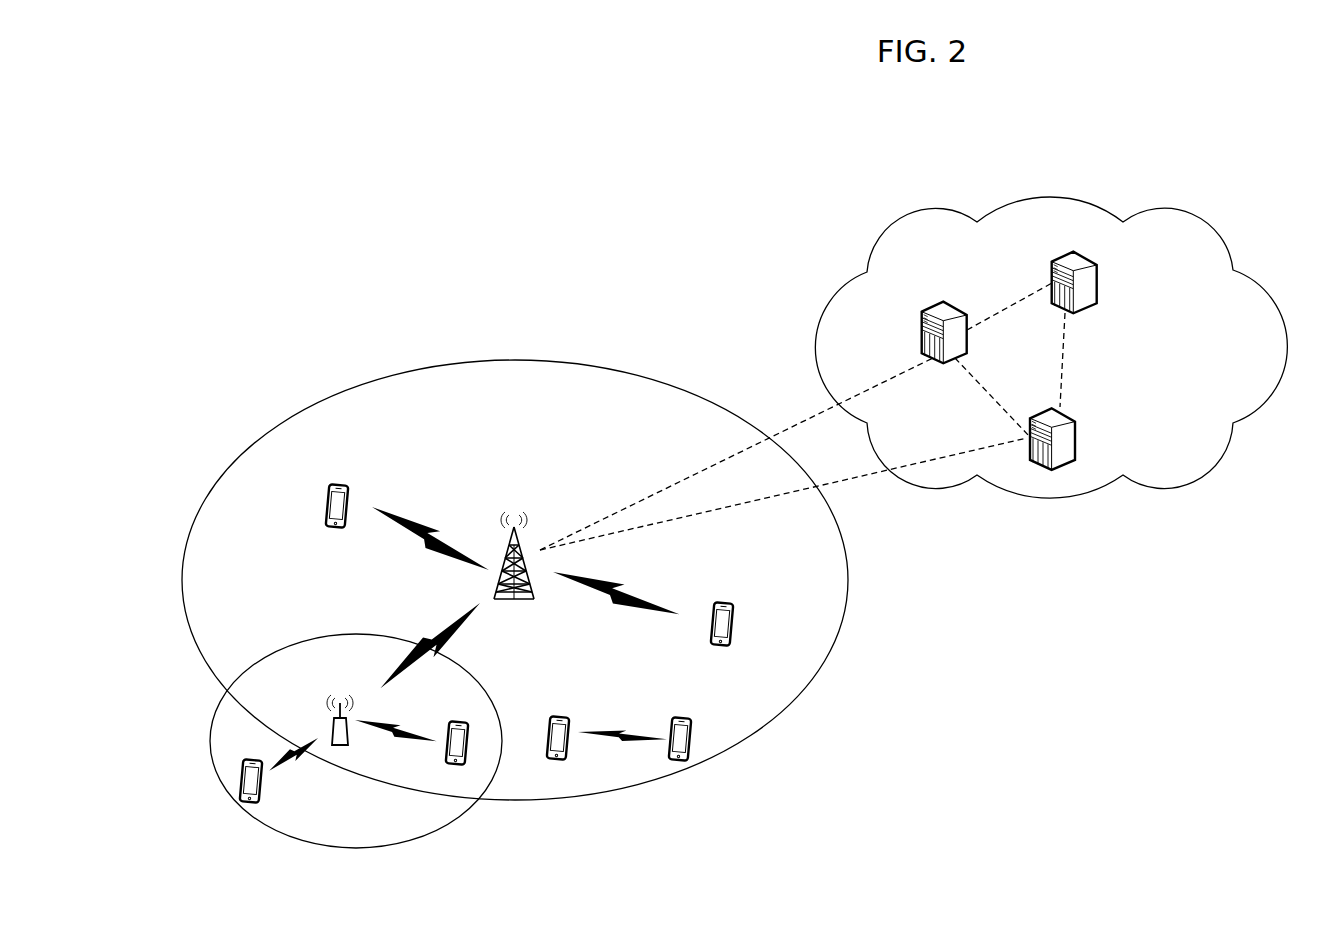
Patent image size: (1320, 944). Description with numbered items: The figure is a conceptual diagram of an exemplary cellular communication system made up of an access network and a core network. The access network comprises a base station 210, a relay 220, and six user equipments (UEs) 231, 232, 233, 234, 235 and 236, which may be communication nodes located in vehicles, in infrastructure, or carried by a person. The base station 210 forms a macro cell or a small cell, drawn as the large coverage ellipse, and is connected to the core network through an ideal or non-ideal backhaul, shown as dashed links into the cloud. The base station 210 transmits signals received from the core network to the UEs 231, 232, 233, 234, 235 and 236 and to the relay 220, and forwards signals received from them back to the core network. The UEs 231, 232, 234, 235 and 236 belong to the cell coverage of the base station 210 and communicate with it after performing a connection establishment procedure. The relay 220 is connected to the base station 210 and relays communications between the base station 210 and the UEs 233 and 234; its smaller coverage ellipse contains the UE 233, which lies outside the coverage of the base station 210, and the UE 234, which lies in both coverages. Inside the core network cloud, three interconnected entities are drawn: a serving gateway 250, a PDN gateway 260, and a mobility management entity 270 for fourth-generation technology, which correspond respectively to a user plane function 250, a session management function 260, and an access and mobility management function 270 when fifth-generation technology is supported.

The base station 210 is at (513, 521).
The relay 220 is at (340, 701).
The user equipment 231 is at (334, 484).
The user equipment 232 is at (717, 602).
The user equipment 233 is at (256, 804).
The user equipment 234 is at (456, 765).
The user equipment 235 is at (553, 716).
The user equipment 236 is at (676, 716).
The serving gateway 250 is at (935, 300).
The packet data network gateway 260 is at (1097, 282).
The mobility management entity 270 is at (1074, 436).